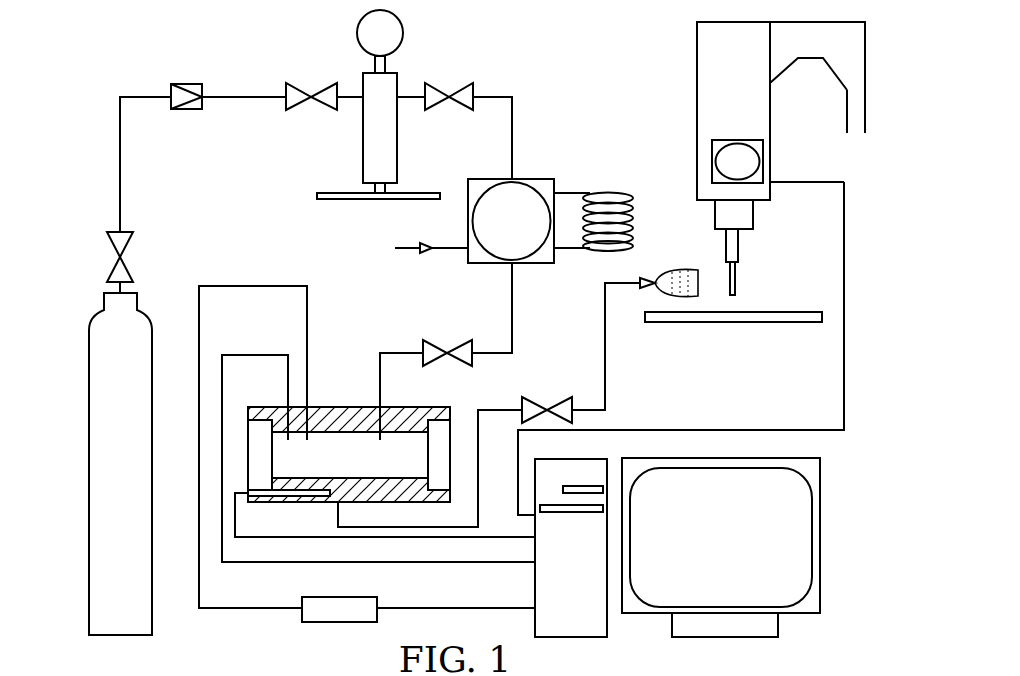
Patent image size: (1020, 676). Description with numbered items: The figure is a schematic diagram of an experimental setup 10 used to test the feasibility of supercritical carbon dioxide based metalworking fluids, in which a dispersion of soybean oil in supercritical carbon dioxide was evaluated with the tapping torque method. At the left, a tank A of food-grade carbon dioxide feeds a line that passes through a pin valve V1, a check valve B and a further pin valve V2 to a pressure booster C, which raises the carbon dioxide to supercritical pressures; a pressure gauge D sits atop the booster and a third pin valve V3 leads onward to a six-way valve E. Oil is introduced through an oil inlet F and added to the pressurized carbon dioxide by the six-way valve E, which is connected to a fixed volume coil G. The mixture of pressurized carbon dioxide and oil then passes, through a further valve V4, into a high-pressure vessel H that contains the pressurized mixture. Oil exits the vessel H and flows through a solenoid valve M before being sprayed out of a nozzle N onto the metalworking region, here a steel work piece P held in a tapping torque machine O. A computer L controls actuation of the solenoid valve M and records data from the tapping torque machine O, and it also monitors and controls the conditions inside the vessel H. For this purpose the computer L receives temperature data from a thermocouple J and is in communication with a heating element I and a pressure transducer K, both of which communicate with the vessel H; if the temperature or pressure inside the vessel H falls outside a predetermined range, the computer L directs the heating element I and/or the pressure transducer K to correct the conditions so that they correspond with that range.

The experimental setup 10 is at (114, 63).
The tank of food-grade carbon dioxide A is at (120, 458).
The check valve B is at (186, 111).
The pressure booster C is at (378, 136).
The pressure gauge D is at (380, 41).
The six-way valve E is at (511, 221).
The oil inlet F is at (422, 248).
The fixed volume coil G is at (593, 207).
The high-pressure vessel H is at (349, 454).
The heating element I is at (385, 513).
The thermocouple J is at (367, 447).
The pressure transducer K is at (418, 600).
The computer L is at (677, 547).
The solenoid valve M is at (547, 396).
The nozzle N is at (667, 272).
The tapping torque machine O is at (781, 158).
The steel work piece P is at (733, 332).
The pin valve V1 is at (139, 257).
The pin valve V2 is at (311, 110).
The pin valve V3 is at (449, 111).
The valve V4 is at (447, 337).